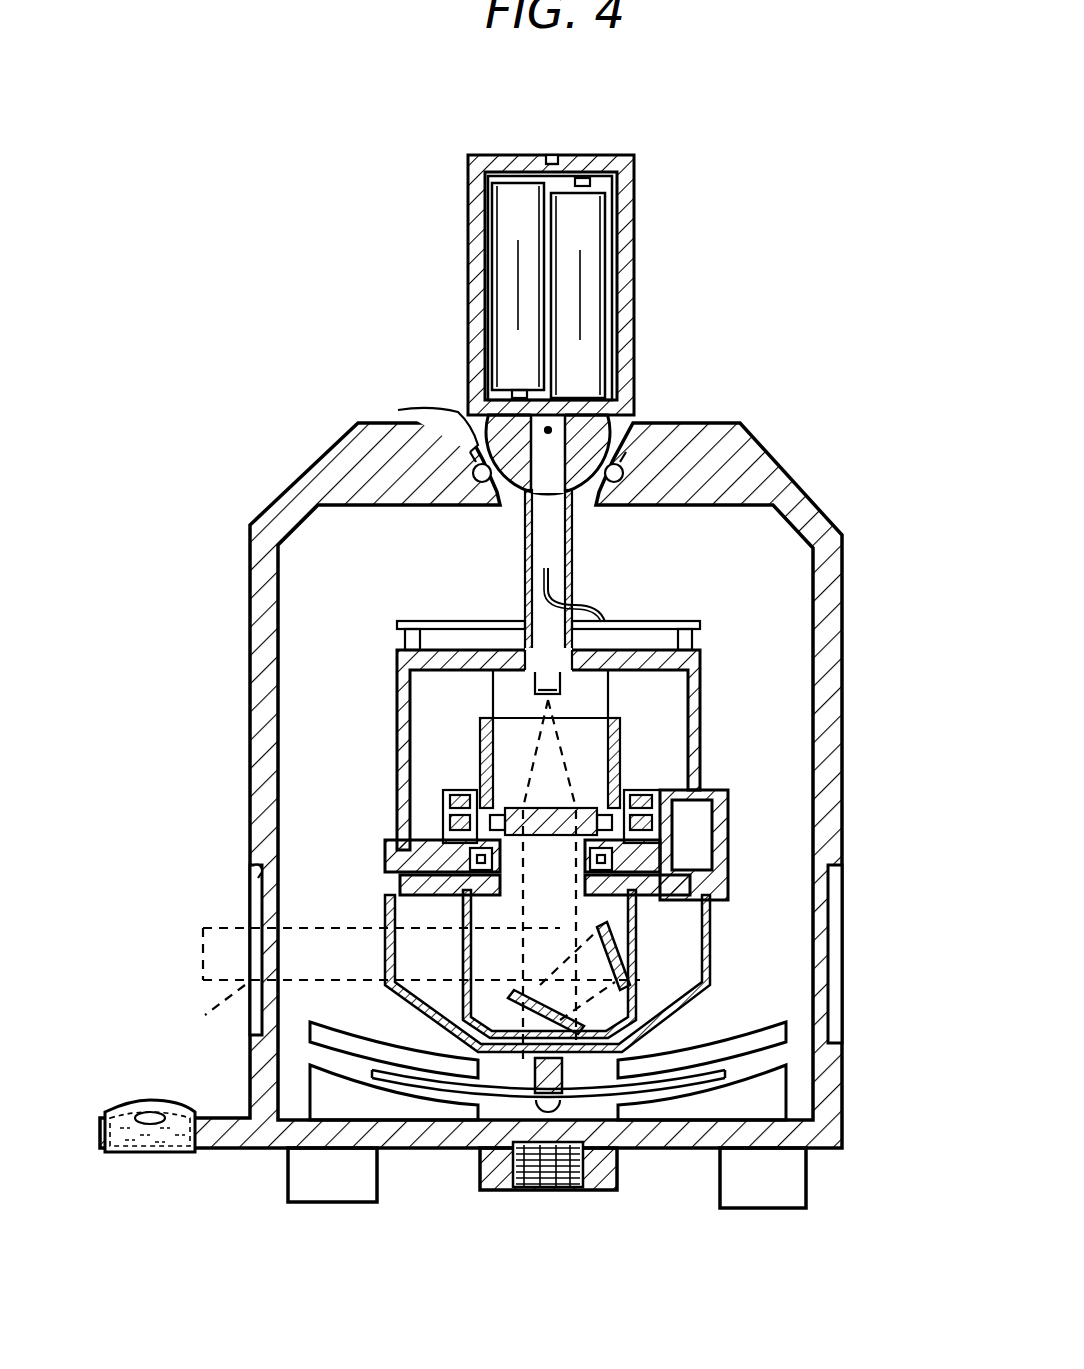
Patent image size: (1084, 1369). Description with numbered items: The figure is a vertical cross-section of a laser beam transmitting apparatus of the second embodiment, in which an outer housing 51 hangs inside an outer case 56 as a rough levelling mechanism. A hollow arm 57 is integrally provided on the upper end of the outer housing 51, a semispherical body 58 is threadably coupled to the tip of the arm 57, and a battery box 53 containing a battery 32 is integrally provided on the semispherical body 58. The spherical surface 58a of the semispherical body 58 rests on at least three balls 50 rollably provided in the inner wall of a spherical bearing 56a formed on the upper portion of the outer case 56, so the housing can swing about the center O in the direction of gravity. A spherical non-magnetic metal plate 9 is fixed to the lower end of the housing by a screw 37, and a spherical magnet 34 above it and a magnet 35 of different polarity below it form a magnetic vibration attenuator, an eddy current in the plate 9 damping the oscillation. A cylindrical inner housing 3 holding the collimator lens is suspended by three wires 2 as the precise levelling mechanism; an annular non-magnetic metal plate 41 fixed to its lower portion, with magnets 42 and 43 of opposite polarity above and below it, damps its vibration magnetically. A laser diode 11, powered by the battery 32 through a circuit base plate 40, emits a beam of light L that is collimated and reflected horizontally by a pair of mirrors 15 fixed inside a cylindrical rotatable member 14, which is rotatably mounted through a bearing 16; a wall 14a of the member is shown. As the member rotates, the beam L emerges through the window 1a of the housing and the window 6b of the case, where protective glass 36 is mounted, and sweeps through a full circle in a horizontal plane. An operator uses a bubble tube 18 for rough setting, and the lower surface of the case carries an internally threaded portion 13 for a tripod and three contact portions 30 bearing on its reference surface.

The window 1a is at (388, 925).
The wires 2 is at (492, 692).
The inner housing 3 is at (615, 722).
The window 6b is at (256, 868).
The spherical non-magnetic metal plate 9 is at (600, 1172).
The laser diode 11 is at (562, 688).
The internally threaded portion 13 is at (588, 1166).
The rotatable member 14 is at (638, 934).
The drum side wall 14a is at (466, 932).
The mirrors 15 is at (622, 952).
The bearing 16 is at (730, 905).
The bubble tube 18 is at (140, 1112).
The contact portions 30 is at (334, 1190).
The battery 32 is at (585, 242).
The spherical magnet 34 is at (770, 1045).
The spherical magnet 35 is at (765, 1100).
The protective glass 36 is at (270, 905).
The screw 37 is at (545, 1172).
The circuit base plate 40 is at (425, 620).
The annular non-magnetic metal plate 41 is at (443, 812).
The magnet 42 is at (640, 798).
The magnet 43 is at (700, 860).
The balls 50 is at (478, 470).
The outer housing 51 is at (400, 695).
The battery box 53 is at (565, 160).
The outer case 56 is at (262, 633).
The spherical bearing 56a is at (452, 430).
The hollow arm 57 is at (526, 550).
The semispherical body 58 is at (618, 432).
The spherical surface 58a is at (628, 448).
The center O is at (548, 430).
The beam of light L is at (409, 984).